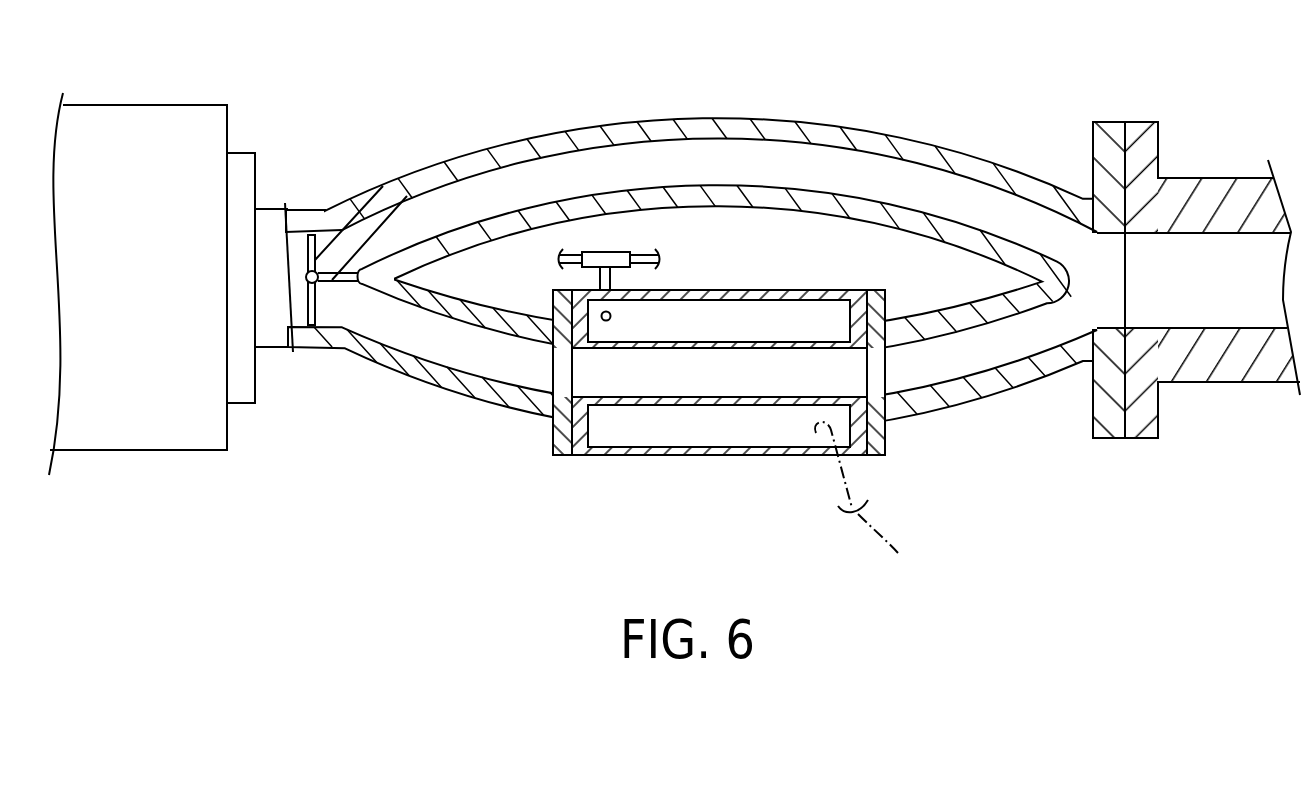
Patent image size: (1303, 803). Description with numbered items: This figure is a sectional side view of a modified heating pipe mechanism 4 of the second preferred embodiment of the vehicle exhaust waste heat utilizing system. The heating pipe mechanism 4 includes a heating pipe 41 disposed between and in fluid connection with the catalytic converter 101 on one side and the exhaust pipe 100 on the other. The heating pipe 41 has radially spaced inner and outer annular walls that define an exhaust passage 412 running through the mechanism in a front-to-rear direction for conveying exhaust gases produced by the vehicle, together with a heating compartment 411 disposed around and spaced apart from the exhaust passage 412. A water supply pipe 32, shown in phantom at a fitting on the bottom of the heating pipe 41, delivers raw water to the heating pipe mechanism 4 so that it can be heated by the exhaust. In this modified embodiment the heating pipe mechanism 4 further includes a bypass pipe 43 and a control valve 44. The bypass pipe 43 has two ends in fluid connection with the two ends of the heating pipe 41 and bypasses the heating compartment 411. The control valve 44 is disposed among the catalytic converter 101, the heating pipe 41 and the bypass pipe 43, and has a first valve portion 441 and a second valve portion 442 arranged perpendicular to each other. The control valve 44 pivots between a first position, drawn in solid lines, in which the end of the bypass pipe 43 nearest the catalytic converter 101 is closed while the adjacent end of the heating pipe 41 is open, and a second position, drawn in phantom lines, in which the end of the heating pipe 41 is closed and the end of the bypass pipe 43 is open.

The heating pipe mechanism 4 is at (684, 290).
The heating pipe 41 is at (719, 418).
The heating compartment 411 is at (810, 430).
The exhaust passage 412 is at (698, 385).
The bypass pipe 43 is at (730, 118).
The control valve 44 is at (364, 247).
The first valve portion 441 is at (317, 250).
The second valve portion 442 is at (312, 303).
The water supply pipe 32 is at (881, 501).
The exhaust pipe 100 is at (1212, 368).
The catalytic converter 101 is at (158, 387).